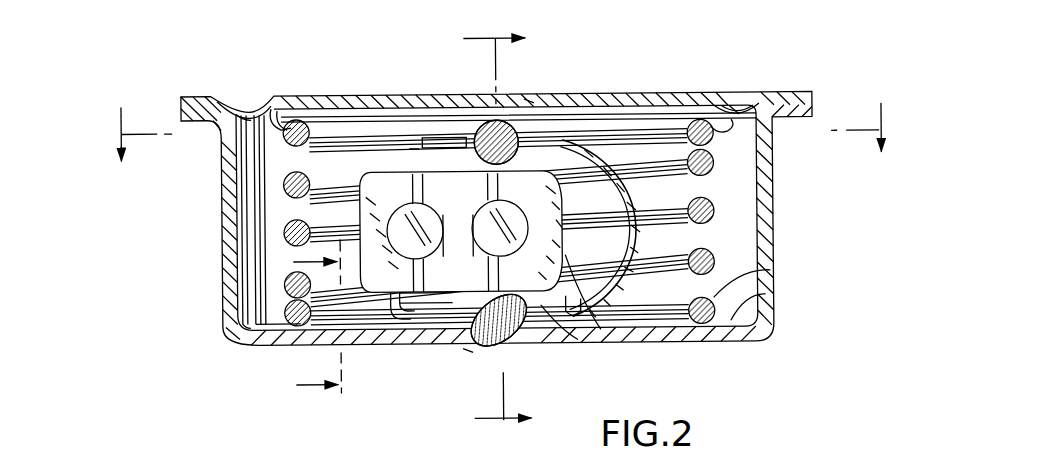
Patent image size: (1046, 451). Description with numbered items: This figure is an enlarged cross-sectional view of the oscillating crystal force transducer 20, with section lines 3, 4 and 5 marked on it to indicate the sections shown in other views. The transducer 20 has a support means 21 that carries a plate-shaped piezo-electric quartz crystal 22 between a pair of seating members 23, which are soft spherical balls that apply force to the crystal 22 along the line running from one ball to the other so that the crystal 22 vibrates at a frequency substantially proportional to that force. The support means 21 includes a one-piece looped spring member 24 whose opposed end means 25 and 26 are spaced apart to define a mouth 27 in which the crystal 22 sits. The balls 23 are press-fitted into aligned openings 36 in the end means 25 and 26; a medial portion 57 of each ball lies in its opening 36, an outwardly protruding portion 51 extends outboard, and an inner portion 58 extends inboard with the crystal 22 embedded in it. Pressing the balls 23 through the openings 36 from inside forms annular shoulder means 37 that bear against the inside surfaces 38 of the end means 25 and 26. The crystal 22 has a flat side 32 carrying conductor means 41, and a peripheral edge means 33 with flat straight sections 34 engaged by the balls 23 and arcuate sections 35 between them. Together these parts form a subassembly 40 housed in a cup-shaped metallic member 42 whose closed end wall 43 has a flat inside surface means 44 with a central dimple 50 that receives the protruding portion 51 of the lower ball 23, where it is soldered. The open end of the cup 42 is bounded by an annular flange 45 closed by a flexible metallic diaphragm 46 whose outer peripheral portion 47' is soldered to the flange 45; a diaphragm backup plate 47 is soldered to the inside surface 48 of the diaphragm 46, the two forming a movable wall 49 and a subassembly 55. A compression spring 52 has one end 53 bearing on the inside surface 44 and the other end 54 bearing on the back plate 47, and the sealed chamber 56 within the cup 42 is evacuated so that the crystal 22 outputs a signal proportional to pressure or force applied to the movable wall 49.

The oscillating crystal force transducer 20 is at (205, 92).
The support means 21 is at (775, 234).
The piezo-electric quartz crystal 22 is at (468, 140).
The seating members 23 is at (528, 97).
The looped spring member 24 is at (668, 230).
The end means 25 is at (421, 136).
The end means 26 is at (405, 345).
The mouth 27 is at (413, 146).
The flat parallel side 32 is at (345, 95).
The peripheral edge means 33 is at (622, 340).
The flat straight parallel sections 34 is at (390, 106).
The arcuate sections 35 is at (292, 207).
The openings 36 is at (456, 98).
The annular shoulder means 37 is at (541, 97).
The inside surfaces 38 is at (578, 343).
The subassembly 40 is at (619, 155).
The conductor means 41 is at (305, 94).
The cup-shaped metallic member 42 is at (222, 259).
The closed end wall 43 is at (685, 343).
The inside surface means 44 is at (765, 296).
The annular flange 45 is at (816, 109).
The flexible metallic diaphragm 46 is at (592, 95).
The diaphragm backup plate 47 is at (272, 67).
The outer peripheral portion 47' is at (795, 65).
The inside surface 48 is at (692, 97).
The movable wall 49 is at (730, 98).
The dimple 50 is at (488, 396).
The outwardly protruding portion 51 is at (508, 97).
The compression spring 52 is at (290, 229).
The spring end 53 is at (770, 272).
The spring end 54 is at (727, 135).
The subassembly 55 is at (270, 91).
The chamber 56 is at (737, 197).
The medial portion 57 is at (484, 98).
The inner portion 58 is at (508, 200).
The section line 3- 3 is at (497, 226).
The section line 4- 4 is at (497, 131).
The section line 5- 5 is at (308, 320).